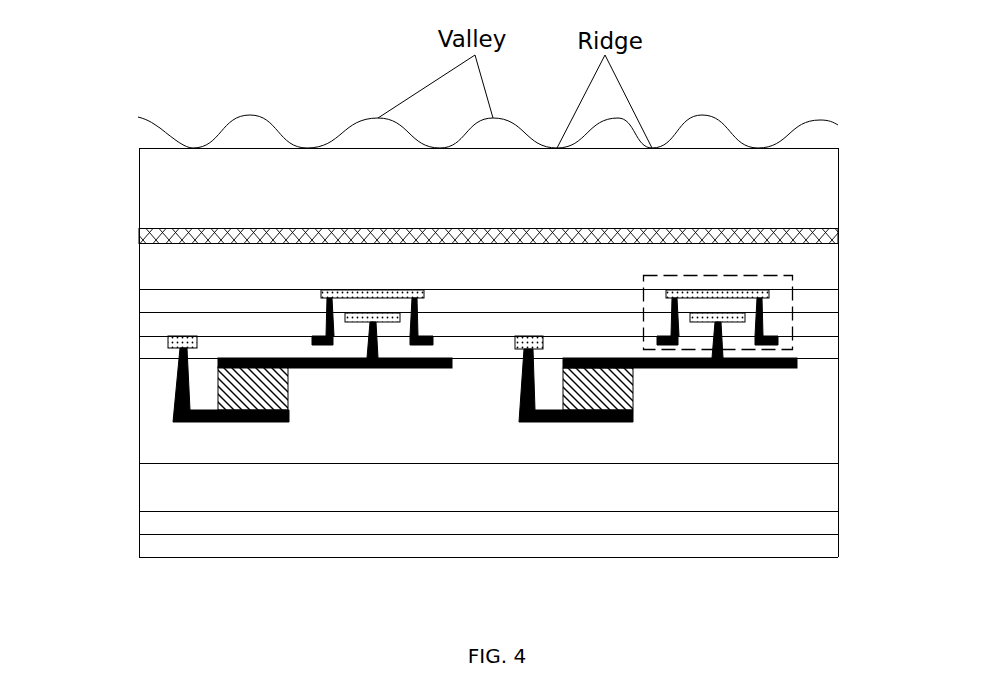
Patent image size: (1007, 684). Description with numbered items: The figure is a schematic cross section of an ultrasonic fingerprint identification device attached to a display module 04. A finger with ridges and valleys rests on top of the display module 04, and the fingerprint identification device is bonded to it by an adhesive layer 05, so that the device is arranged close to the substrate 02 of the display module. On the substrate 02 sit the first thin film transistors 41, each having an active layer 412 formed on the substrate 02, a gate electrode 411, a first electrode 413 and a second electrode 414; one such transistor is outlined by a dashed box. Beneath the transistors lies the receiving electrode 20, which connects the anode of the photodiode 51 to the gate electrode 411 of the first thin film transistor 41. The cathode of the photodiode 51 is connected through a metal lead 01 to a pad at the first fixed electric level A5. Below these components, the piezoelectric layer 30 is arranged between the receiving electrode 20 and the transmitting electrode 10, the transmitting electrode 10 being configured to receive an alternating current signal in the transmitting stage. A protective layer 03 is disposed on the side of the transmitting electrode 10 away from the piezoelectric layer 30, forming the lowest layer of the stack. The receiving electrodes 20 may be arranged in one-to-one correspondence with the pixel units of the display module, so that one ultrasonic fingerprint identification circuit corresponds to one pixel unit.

The display module 04 is at (160, 202).
The adhesive layer 05 is at (140, 235).
The substrate 02 is at (828, 257).
The first fixed electric level A5 is at (528, 348).
The metal lead 01 is at (575, 422).
The photodiode 51 is at (627, 388).
The receiving electrode 20 is at (743, 368).
The first thin film transistor 41 is at (737, 285).
The gate electrode 411 is at (730, 313).
The active layer 412 is at (693, 290).
The first electrode 413 is at (670, 320).
The second electrode 414 is at (763, 322).
The piezoelectric layer 30 is at (827, 487).
The transmitting electrode 10 is at (827, 522).
The protective layer 03 is at (827, 545).